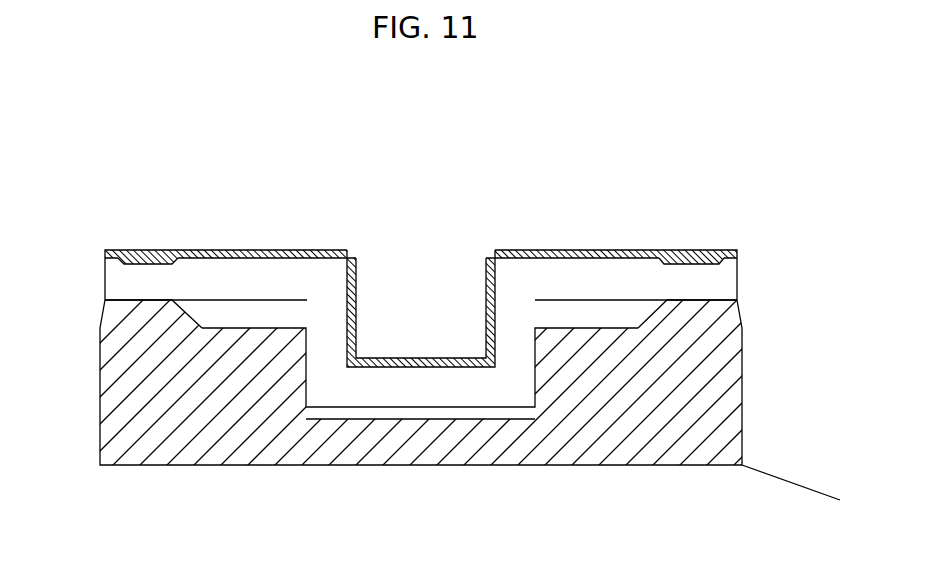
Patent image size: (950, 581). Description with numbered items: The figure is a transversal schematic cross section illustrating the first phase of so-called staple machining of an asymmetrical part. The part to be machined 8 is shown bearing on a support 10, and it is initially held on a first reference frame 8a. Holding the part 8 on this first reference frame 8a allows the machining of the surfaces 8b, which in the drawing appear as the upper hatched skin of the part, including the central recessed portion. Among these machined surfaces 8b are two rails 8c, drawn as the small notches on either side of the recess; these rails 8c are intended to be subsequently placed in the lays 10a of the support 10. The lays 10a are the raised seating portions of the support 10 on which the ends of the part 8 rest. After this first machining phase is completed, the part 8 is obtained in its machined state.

The part to be machined 8 is at (557, 278).
The first reference frame 8a is at (137, 300).
The surfaces 8b is at (355, 283).
The rails 8c is at (148, 263).
The support 10 is at (592, 453).
The lays 10a is at (148, 307).